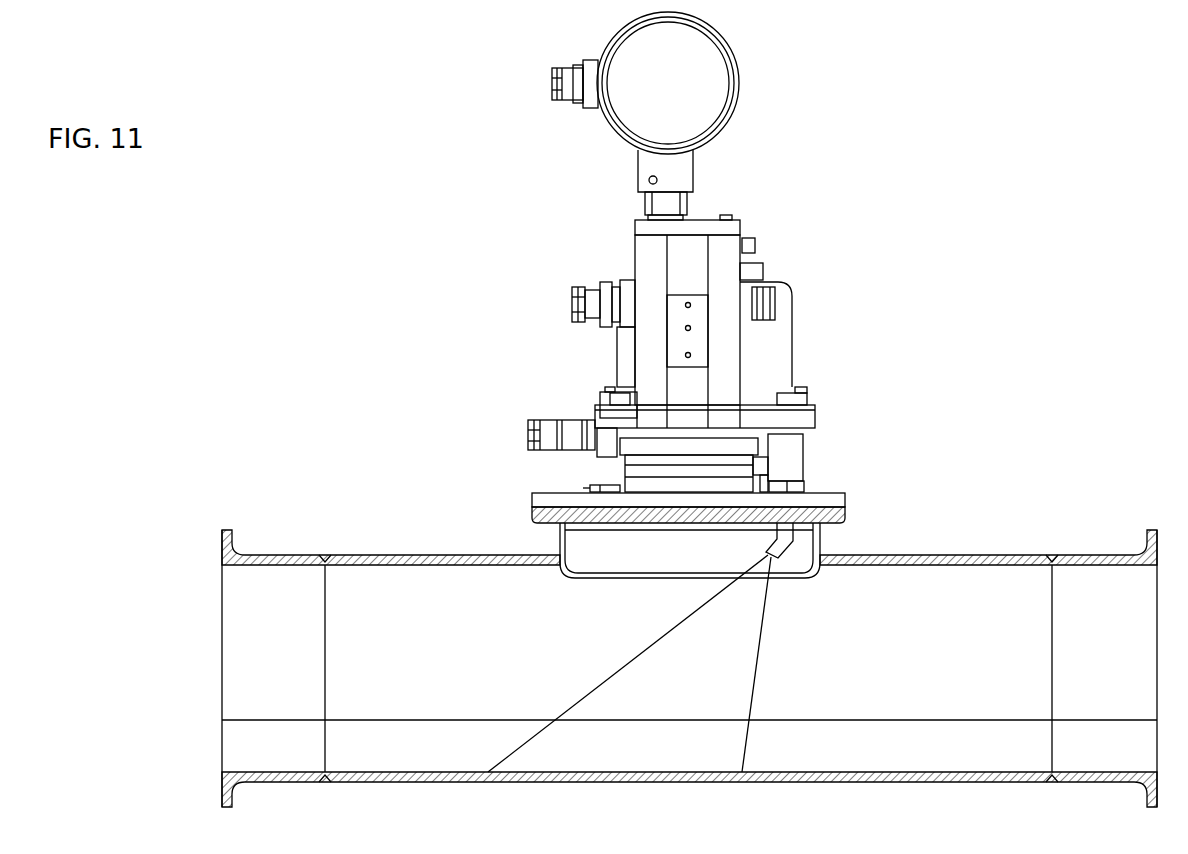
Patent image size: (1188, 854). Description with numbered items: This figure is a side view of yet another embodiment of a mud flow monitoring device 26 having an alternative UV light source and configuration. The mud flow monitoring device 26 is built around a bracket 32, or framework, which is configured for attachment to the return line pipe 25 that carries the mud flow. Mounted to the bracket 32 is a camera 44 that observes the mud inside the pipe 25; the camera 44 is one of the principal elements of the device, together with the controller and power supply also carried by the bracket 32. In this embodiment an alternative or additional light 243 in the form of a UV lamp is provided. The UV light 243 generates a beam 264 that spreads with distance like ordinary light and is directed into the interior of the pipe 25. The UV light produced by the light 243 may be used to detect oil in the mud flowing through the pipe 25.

The mud flow monitoring device 26 is at (786, 262).
The camera 44 is at (730, 380).
The UV light 243 is at (803, 458).
The bracket 32 is at (845, 497).
The pipe 25 is at (940, 555).
The beam 264 is at (757, 663).